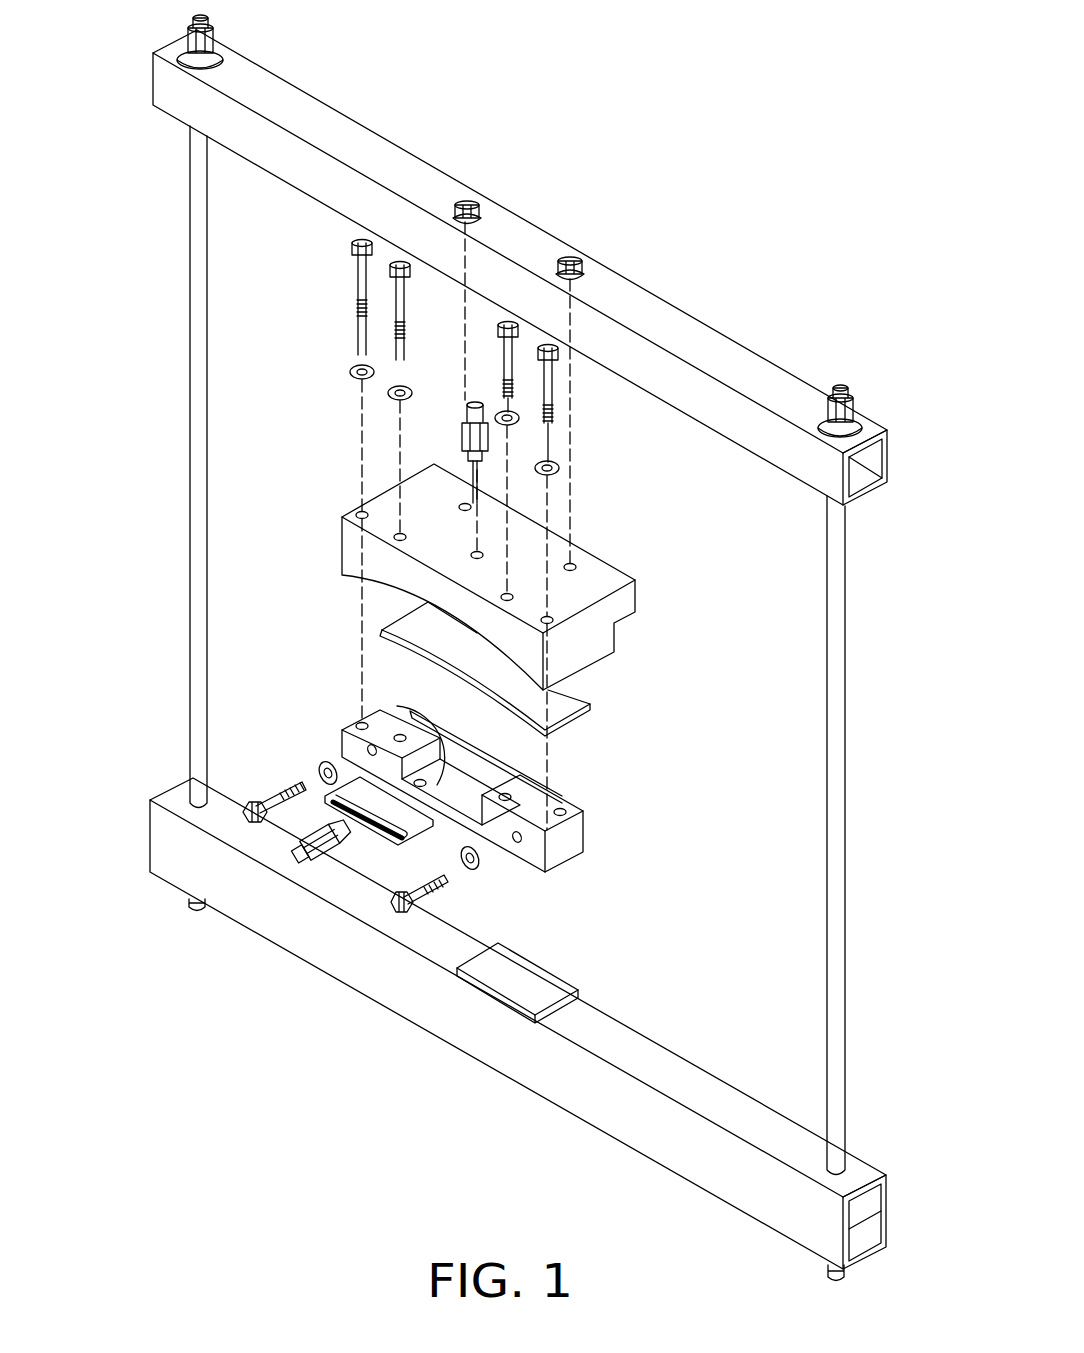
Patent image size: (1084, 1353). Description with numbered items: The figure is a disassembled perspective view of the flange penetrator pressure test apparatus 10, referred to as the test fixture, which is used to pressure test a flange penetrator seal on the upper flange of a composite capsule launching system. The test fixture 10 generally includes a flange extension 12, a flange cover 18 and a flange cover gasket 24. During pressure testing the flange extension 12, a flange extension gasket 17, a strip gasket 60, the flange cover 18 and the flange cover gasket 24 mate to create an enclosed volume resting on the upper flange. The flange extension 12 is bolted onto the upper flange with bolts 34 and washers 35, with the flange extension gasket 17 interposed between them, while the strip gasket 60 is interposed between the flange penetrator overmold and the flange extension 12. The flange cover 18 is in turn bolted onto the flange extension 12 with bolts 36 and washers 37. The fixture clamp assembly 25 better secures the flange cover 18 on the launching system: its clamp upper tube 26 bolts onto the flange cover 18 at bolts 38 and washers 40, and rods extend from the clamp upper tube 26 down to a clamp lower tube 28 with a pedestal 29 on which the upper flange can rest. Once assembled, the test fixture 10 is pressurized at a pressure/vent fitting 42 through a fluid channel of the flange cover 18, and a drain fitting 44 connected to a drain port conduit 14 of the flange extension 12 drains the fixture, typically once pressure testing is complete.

The flange penetrator pressure test apparatus 10 is at (272, 1083).
The flange extension 12 is at (343, 737).
The drain port conduit 14 is at (448, 742).
The flange extension gasket 17 is at (387, 704).
The flange cover 18 is at (345, 525).
The flange cover gasket 24 is at (383, 627).
The fixture clamp assembly 25 is at (352, 119).
The clamp upper tube 26 is at (153, 96).
The clamp lower tube 28 is at (515, 1087).
The pedestal 29 is at (538, 978).
The bolts 34 is at (262, 800).
The washers 35 is at (318, 768).
The bolts 36 is at (553, 393).
The washers 37 is at (562, 471).
The bolts 38 is at (470, 200).
The washers 40 is at (576, 256).
The pressure/vent fitting 42 is at (462, 432).
The drain fitting 44 is at (340, 845).
The strip gasket 60 is at (430, 830).